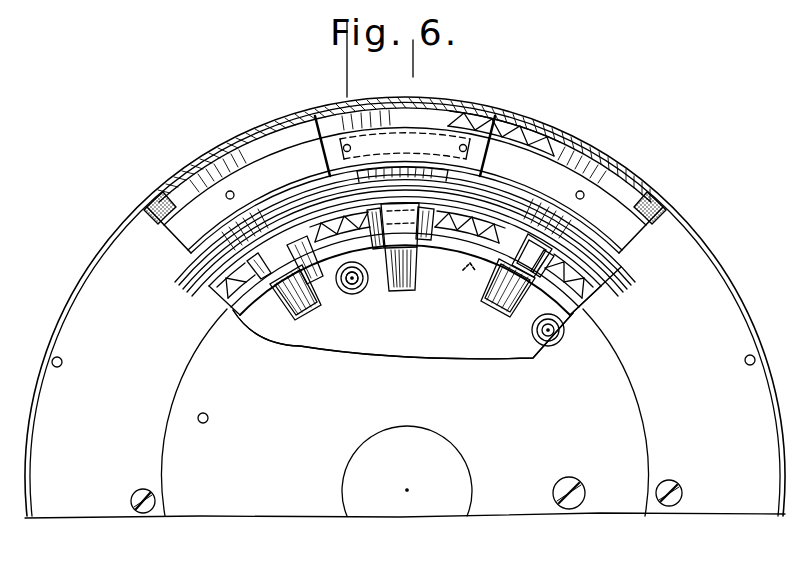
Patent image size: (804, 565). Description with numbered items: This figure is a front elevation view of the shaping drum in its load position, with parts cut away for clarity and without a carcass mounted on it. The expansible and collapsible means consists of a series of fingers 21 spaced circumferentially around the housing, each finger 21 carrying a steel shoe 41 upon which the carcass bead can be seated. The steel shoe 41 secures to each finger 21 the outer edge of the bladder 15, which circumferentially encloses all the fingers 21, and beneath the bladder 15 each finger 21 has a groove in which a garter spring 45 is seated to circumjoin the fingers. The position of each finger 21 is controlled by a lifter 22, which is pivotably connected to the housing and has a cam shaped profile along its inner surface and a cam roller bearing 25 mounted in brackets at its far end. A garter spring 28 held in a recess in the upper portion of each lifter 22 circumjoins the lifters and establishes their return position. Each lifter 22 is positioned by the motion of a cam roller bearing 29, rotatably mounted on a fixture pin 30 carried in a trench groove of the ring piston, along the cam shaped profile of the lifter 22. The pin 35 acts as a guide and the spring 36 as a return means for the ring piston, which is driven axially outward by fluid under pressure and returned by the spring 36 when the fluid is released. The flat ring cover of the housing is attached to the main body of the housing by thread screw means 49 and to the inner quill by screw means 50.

The bladder 15 is at (263, 128).
The finger 21 is at (204, 160).
The steel shoe 41 is at (612, 225).
The garter spring 45 is at (502, 115).
The cam roller bearing 25 is at (283, 271).
The garter spring 28 is at (223, 289).
The cam roller bearing 29 is at (302, 306).
The lifter 22 is at (316, 303).
The pin 35 is at (353, 289).
The spring 36 is at (376, 313).
The fixture pin 30 is at (443, 268).
The thread screw means 49 is at (569, 508).
The screw means 50 is at (668, 504).